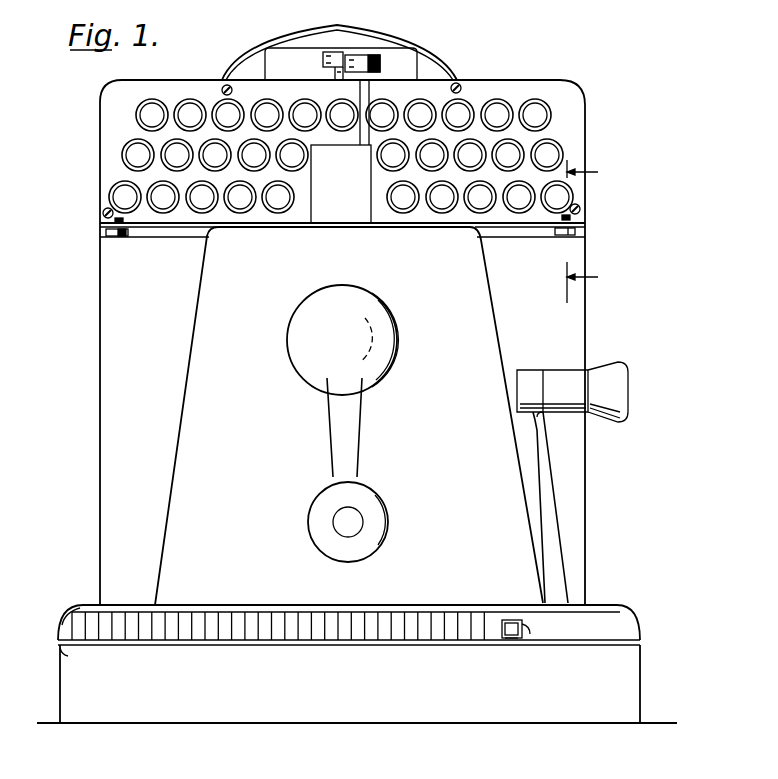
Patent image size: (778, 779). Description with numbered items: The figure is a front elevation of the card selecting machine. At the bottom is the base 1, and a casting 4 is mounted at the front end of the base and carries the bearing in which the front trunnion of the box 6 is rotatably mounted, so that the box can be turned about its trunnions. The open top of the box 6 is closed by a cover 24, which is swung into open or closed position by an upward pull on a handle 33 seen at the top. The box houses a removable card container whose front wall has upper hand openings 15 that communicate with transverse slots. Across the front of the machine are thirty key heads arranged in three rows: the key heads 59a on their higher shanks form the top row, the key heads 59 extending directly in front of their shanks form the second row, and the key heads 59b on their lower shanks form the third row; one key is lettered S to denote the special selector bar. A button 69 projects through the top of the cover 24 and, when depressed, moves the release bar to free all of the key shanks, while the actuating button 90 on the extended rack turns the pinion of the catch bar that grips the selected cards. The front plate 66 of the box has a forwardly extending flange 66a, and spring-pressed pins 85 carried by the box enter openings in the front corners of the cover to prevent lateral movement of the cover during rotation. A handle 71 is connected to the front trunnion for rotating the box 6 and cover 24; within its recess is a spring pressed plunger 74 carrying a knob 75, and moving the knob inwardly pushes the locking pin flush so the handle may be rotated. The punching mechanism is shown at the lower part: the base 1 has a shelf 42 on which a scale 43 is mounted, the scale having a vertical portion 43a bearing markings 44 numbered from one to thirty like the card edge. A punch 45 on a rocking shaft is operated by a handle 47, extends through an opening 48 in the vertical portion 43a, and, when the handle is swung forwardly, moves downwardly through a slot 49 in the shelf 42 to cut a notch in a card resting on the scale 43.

The base 1 is at (633, 668).
The casting 4 is at (187, 452).
The box 6 is at (112, 414).
The upper hand openings 15 is at (594, 231).
The cover 24 is at (512, 80).
The handle 33 is at (358, 25).
The shelf 42 is at (630, 632).
The scale 43 is at (60, 650).
The vertical portion 43a is at (68, 625).
The markings 44 is at (247, 617).
The punch 45 is at (511, 620).
The handle 47 is at (542, 477).
The opening 48 is at (523, 630).
The slot 49 is at (510, 640).
The key head 59 is at (122, 153).
The key head 59a is at (137, 110).
The key head 59b is at (110, 196).
The front plate 66 is at (173, 85).
The flange 66a is at (172, 228).
The button 69 is at (323, 60).
The handle 71 is at (353, 430).
The spring pressed plunger 74 is at (341, 524).
The knob 75 is at (378, 516).
The pins 85 is at (115, 222).
The actuating button 90 is at (378, 64).